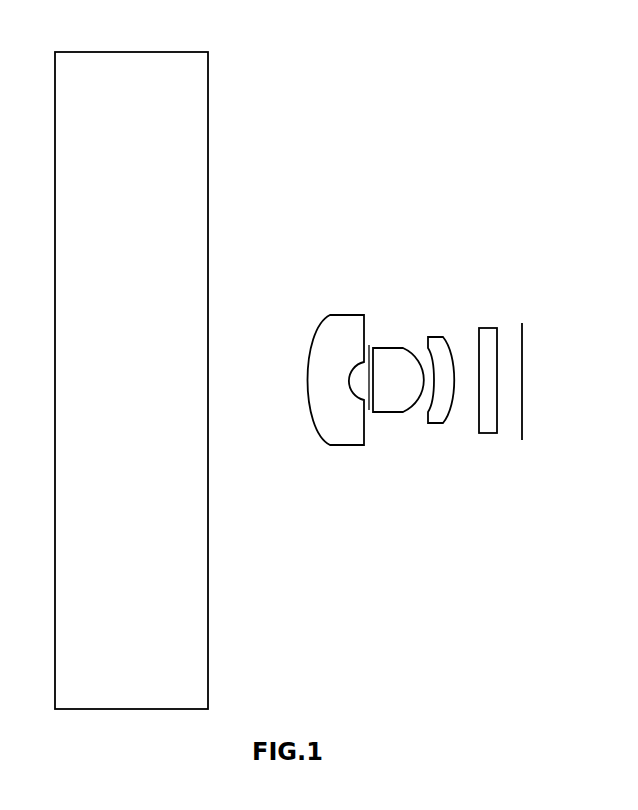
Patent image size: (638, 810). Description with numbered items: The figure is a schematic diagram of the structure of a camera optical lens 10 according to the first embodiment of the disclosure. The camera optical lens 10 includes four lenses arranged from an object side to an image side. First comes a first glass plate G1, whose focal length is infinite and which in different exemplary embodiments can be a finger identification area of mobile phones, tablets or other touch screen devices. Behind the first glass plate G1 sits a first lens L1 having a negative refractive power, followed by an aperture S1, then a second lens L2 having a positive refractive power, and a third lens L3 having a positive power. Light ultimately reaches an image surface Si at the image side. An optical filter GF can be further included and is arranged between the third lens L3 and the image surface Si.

The camera optical lens 10 is at (298, 27).
The first glass plate G1 is at (131, 366).
The first lens L1 is at (336, 367).
The aperture S1 is at (369, 346).
The second lens L2 is at (398, 369).
The third lens L3 is at (438, 367).
The optical filter GF is at (483, 365).
The image surface Si is at (519, 367).